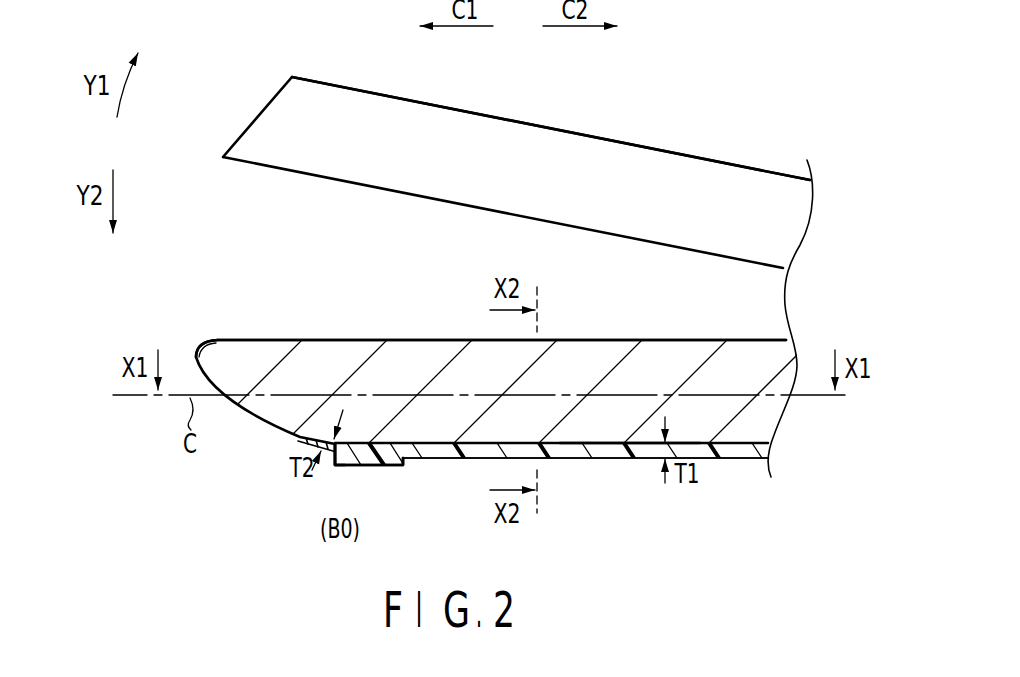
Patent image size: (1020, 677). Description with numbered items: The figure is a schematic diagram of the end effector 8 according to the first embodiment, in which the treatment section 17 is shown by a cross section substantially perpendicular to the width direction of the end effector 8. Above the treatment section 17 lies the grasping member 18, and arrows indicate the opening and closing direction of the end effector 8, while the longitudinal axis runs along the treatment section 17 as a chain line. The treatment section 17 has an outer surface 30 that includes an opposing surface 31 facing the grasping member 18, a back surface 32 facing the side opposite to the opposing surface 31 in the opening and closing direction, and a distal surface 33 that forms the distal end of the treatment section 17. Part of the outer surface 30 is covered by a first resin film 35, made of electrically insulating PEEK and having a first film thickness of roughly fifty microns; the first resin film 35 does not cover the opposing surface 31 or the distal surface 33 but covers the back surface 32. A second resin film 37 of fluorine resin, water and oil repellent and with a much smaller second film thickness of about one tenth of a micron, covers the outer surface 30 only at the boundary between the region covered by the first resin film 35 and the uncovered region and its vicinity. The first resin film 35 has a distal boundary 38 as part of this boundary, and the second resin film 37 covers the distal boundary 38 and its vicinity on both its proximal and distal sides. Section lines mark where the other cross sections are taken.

The end effector 8 is at (658, 119).
The grasping member 18 is at (544, 157).
The outer surface 30 is at (306, 337).
The opposing surface 31 is at (404, 338).
The back surface 32 is at (440, 459).
The distal surface 33 is at (197, 344).
The first resin film 35 is at (576, 454).
The second resin film 37 is at (381, 467).
The distal boundary 38 is at (338, 467).
The treatment section 17 is at (623, 419).